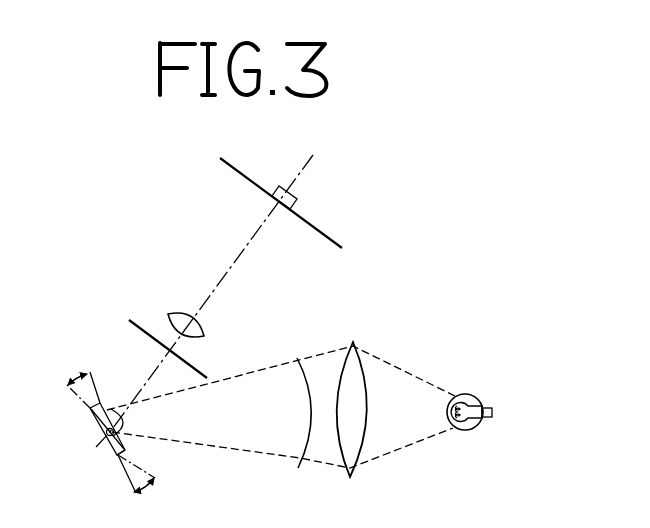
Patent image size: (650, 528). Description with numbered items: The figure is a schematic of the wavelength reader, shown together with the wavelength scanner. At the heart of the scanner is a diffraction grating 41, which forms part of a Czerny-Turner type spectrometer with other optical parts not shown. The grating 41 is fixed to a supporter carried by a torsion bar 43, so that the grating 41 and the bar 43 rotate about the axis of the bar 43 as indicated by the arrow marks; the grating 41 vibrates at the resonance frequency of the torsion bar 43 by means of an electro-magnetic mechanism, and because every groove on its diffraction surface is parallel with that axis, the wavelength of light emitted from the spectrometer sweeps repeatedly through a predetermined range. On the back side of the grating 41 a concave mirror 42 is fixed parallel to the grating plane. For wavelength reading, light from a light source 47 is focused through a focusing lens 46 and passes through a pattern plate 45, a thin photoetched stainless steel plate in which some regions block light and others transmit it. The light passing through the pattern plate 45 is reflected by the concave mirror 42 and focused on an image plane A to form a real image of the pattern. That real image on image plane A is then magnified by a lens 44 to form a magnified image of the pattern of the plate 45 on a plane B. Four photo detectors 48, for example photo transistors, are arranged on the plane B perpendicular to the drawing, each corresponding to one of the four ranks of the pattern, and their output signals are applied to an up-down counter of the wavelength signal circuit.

The diffraction grating 41 is at (114, 456).
The concave mirror 42 is at (108, 403).
The torsion bar 43 is at (106, 432).
The lens 44 is at (180, 316).
The pattern plate 45 is at (300, 466).
The focusing lens 46 is at (357, 362).
The light source 47 is at (468, 394).
The photo detectors 48 is at (283, 186).
The image plane A is at (136, 317).
The plane B is at (320, 235).